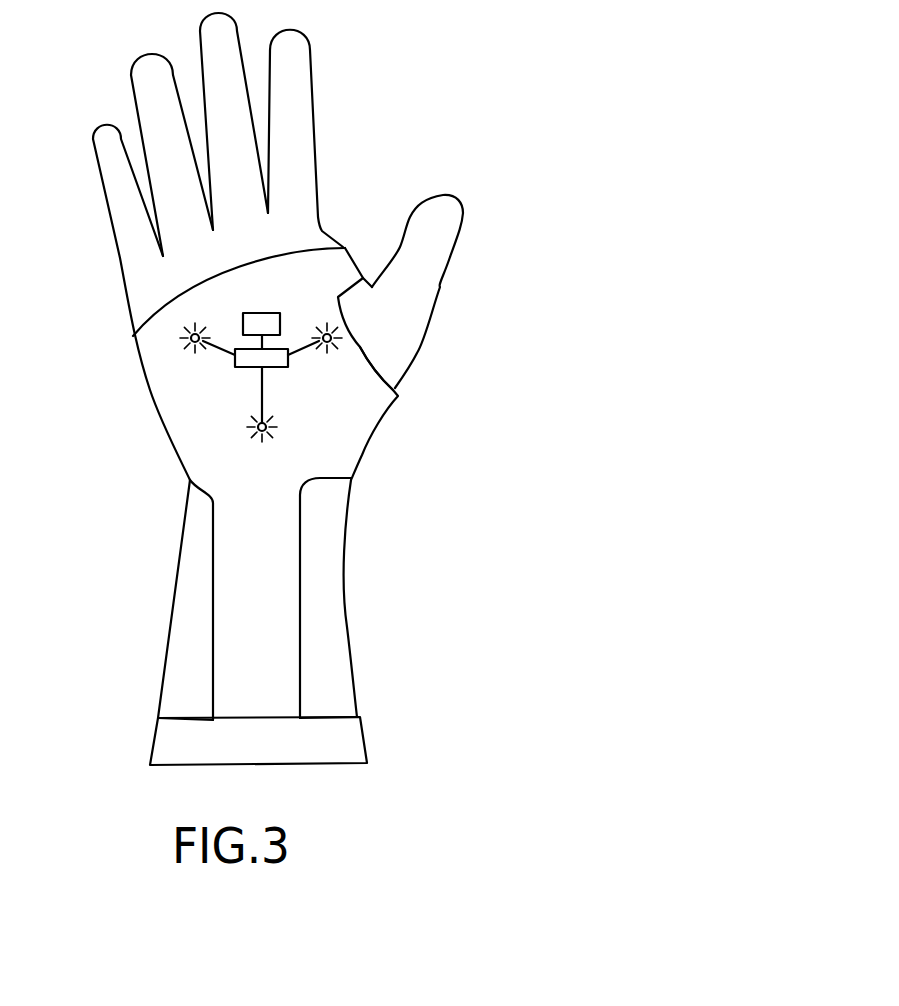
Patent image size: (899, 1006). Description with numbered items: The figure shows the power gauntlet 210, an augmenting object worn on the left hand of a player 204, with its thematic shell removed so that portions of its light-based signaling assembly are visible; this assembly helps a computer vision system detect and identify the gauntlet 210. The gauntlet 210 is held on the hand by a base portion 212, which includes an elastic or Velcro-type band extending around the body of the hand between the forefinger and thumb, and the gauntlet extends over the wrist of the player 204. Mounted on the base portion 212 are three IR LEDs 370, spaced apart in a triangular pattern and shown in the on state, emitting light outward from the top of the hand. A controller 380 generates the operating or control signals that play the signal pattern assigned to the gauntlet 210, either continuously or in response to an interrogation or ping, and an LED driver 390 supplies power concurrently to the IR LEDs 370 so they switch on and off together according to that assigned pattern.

The player 204 is at (344, 548).
The power gauntlet 210 is at (158, 463).
The base portion 212 is at (352, 256).
The IR LEDs 370 is at (313, 338).
The controller 380 is at (268, 316).
The LED driver 390 is at (363, 412).